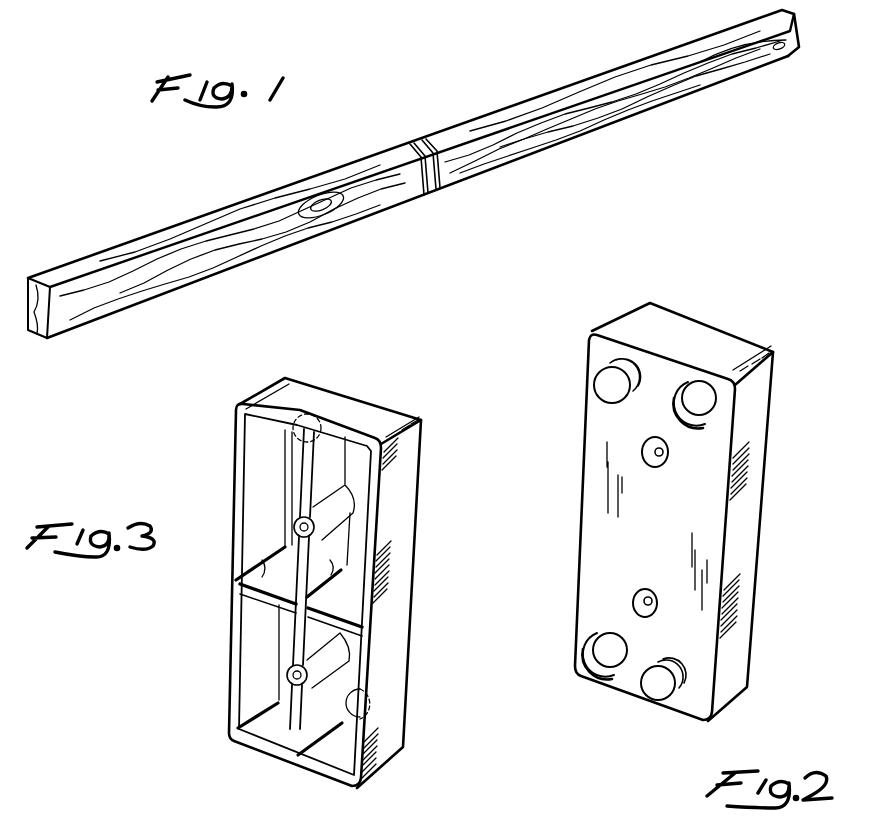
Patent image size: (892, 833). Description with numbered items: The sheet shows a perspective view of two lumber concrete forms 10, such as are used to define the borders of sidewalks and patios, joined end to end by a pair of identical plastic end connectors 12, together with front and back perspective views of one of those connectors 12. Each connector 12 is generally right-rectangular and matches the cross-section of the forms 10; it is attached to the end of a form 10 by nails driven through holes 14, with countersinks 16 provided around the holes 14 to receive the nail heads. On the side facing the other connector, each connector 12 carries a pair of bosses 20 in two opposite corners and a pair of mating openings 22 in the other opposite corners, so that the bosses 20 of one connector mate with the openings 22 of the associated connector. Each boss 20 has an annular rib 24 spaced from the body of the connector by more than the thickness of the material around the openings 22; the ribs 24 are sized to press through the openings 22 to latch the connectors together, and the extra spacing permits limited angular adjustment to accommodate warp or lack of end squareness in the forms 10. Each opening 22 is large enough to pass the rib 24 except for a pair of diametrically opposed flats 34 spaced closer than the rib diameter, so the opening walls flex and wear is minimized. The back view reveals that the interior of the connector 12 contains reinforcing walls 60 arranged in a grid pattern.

In FIG. 1, the concrete forms 10 is at (178, 273).
In FIG. 1, the end connectors 12 is at (430, 195).
In FIG. 2, the end connectors 12 is at (608, 527).
In FIG. 3, the end connectors 12 is at (362, 410).
In FIG. 2, the holes 14 is at (647, 455).
In FIG. 3, the holes 14 is at (300, 525).
In FIG. 2, the countersinks 16 is at (647, 460).
In FIG. 2, the bosses 20 is at (600, 388).
In FIG. 2, the openings 22 is at (703, 412).
In FIG. 3, the openings 22 is at (324, 423).
In FIG. 2, the annular rib 24 is at (632, 374).
In FIG. 2, the flats 34 is at (690, 395).
In FIG. 3, the reinforcing walls 60 is at (330, 562).